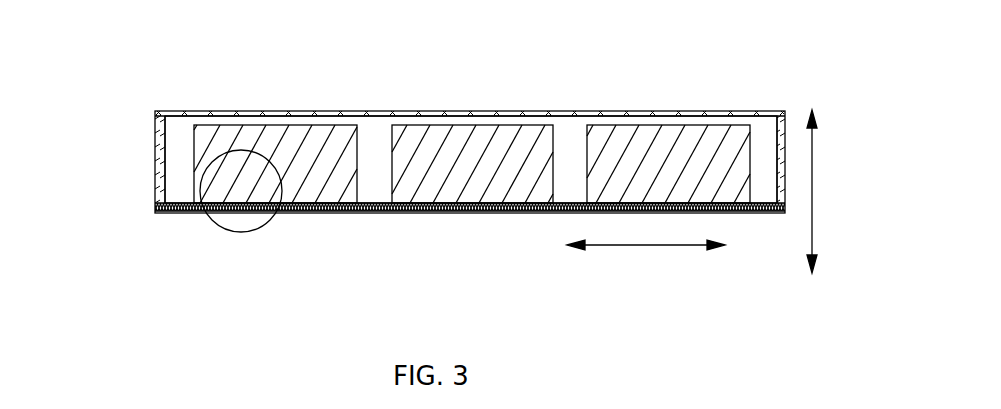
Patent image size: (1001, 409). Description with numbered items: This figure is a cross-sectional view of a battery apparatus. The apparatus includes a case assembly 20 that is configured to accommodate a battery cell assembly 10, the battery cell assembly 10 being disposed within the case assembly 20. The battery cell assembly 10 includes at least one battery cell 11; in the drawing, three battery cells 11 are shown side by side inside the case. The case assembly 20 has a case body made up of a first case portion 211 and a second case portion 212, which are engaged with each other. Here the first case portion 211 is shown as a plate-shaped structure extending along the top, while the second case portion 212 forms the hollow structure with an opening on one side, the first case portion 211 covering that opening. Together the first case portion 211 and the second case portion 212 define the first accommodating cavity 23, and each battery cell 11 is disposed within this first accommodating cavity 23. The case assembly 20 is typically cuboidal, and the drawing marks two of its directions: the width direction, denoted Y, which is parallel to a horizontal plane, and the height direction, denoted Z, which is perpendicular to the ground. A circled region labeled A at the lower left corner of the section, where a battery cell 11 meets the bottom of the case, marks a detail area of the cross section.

The battery cell assembly 10 is at (515, 197).
The battery cell 11 is at (296, 132).
The case assembly 20 is at (146, 214).
The first case portion 211 is at (213, 110).
The second case portion 212 is at (155, 152).
The first accommodating cavity 23 is at (760, 120).
The detail region A is at (257, 232).
The height direction Z is at (824, 191).
The width direction Y is at (646, 262).